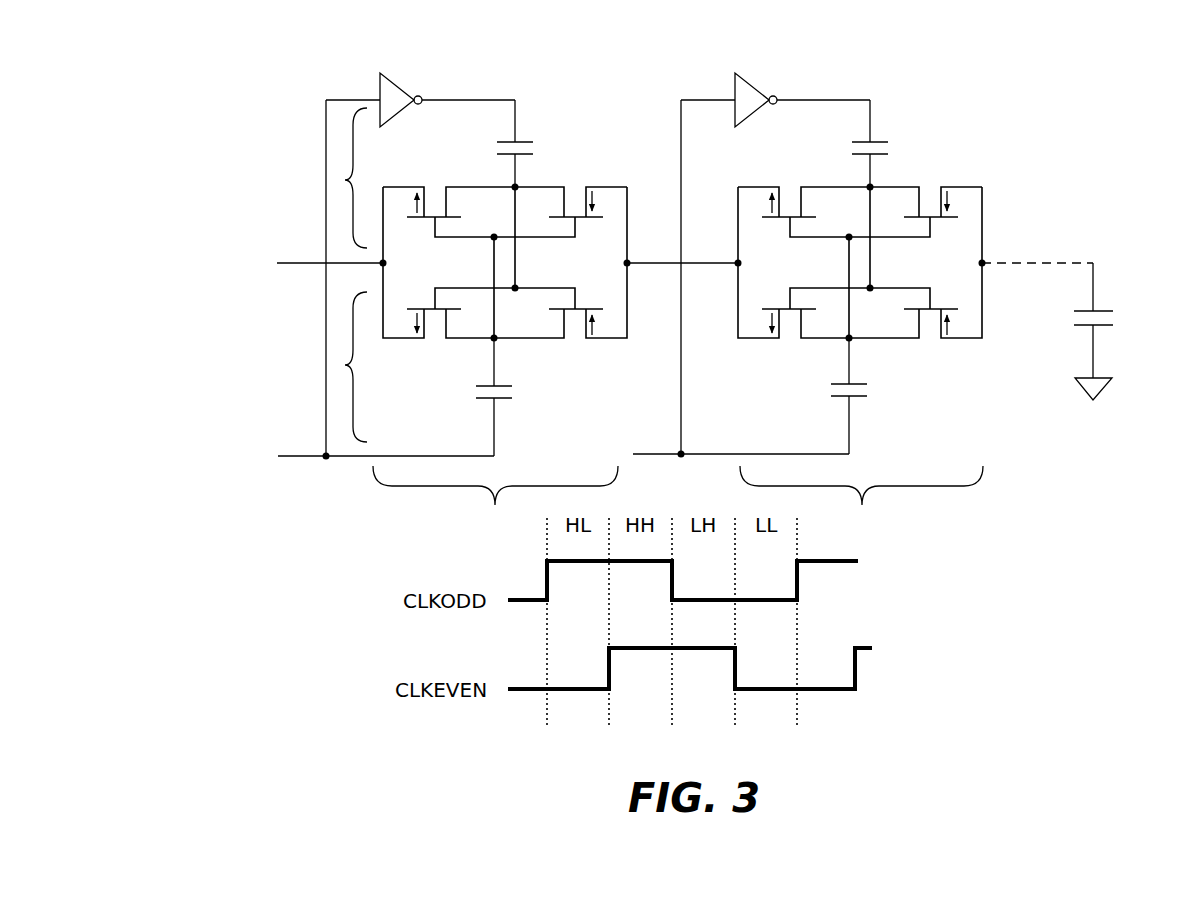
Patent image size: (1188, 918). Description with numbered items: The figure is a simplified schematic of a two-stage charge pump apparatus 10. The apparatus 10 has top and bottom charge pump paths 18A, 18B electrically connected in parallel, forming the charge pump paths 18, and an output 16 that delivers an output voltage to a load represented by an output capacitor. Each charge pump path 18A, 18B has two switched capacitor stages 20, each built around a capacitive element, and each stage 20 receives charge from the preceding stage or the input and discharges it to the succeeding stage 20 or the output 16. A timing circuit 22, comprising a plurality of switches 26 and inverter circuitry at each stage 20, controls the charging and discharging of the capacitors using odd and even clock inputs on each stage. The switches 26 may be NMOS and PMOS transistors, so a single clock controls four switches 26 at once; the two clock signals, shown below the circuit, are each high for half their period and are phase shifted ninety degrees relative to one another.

The charge pump apparatus 10 is at (961, 88).
The output 16 is at (1036, 218).
The charge pump paths 18 is at (633, 60).
The top charge pump path 18A is at (345, 180).
The bottom charge pump path 18B is at (345, 365).
The switched capacitor stage 20 is at (678, 501).
The timing circuit 22 is at (414, 80).
The switches 26 is at (417, 235).